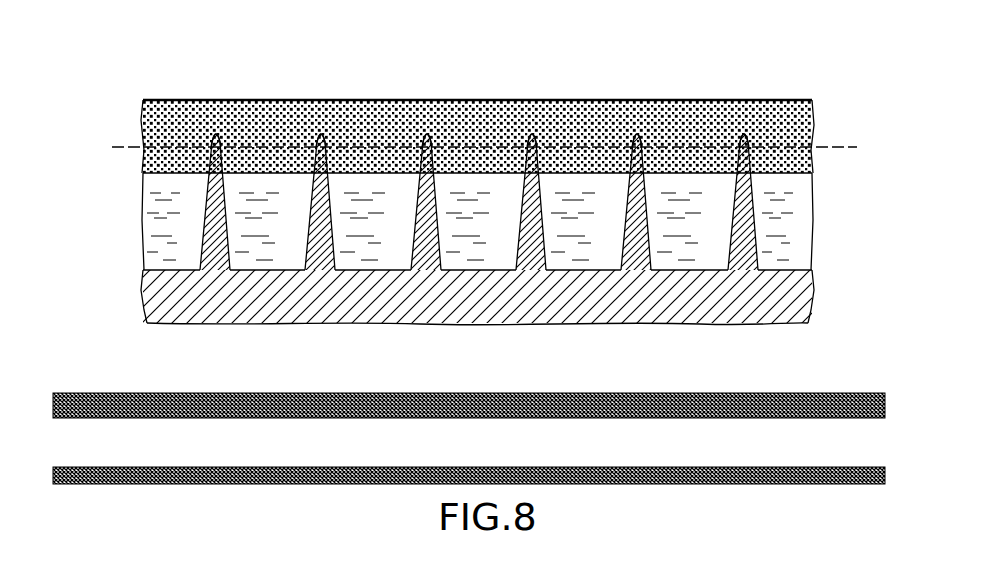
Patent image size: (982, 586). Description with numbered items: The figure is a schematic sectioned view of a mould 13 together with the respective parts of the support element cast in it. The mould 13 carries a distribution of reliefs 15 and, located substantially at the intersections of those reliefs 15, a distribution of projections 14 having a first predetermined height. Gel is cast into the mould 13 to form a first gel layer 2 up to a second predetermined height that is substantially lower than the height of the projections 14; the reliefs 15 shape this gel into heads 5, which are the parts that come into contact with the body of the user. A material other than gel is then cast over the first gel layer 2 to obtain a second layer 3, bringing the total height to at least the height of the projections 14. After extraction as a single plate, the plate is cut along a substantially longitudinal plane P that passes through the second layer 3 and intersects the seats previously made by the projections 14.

The first gel layer 2 is at (800, 242).
The second layer 3 is at (766, 110).
The heads 5 is at (270, 271).
The mould 13 is at (513, 298).
The projections 14 is at (206, 147).
The reliefs 15 is at (215, 262).
The plane P is at (127, 145).